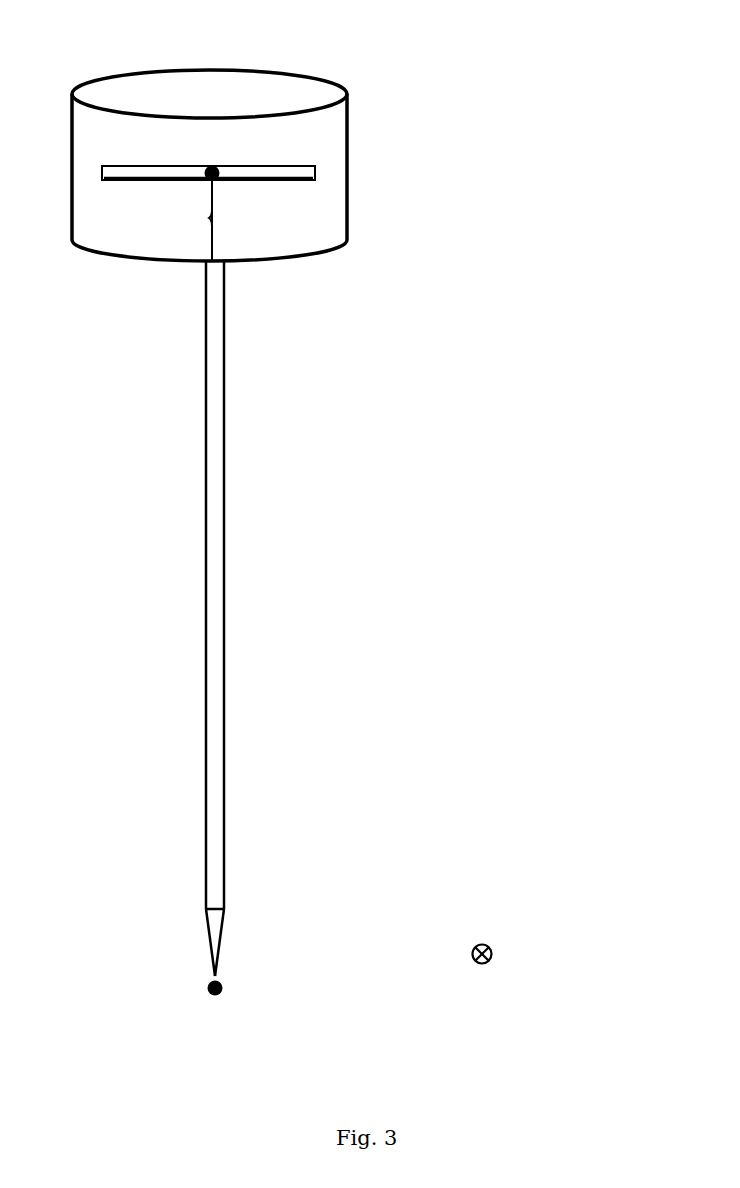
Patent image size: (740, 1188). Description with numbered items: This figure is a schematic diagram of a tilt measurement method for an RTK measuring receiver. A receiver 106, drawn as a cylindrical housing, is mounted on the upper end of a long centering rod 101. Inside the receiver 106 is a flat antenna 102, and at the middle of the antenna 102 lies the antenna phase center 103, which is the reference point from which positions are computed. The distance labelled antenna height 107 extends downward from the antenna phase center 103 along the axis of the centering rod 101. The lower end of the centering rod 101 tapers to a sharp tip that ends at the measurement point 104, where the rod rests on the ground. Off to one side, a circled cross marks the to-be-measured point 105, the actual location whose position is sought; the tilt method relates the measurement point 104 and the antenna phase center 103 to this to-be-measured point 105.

The centering rod 101 is at (205, 545).
The antenna 102 is at (315, 177).
The antenna phase center 103 is at (216, 176).
The measurement point 104 is at (209, 992).
The to-be-measured point 105 is at (493, 943).
The receiver 106 is at (312, 73).
The antenna height 107 is at (181, 220).